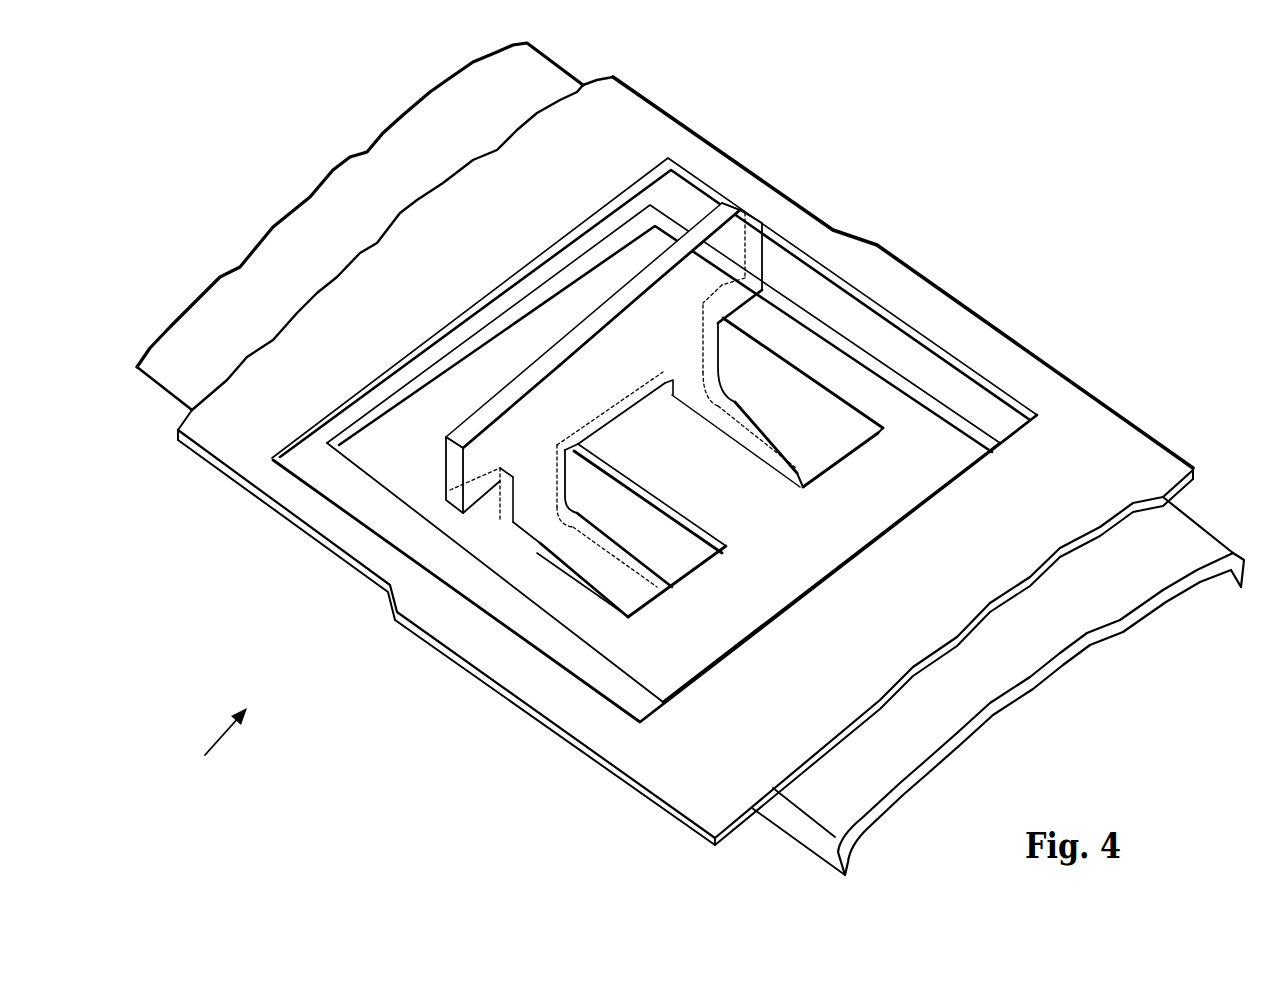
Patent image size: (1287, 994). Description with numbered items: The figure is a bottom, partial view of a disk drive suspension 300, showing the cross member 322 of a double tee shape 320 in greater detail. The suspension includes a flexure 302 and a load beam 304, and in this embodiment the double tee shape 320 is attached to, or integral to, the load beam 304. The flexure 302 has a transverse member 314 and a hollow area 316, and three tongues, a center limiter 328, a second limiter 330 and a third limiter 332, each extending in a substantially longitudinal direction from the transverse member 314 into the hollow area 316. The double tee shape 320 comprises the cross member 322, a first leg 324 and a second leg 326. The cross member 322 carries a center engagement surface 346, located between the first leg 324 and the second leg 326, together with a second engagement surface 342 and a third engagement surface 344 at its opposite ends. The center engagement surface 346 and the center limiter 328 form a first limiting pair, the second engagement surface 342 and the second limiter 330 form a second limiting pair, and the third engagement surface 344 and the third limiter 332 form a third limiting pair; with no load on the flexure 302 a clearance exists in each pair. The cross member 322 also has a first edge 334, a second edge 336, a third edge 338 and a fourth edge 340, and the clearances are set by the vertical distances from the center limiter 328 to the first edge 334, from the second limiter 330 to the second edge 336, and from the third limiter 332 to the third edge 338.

The disk drive suspension 300 is at (207, 753).
The flexure 302 is at (700, 770).
The load beam 304 is at (1074, 591).
The transverse member 314 is at (825, 500).
The hollow area 316 is at (840, 440).
The double tee shape 320 is at (647, 350).
The cross member 322 is at (530, 437).
The first leg 324 is at (693, 385).
The second leg 326 is at (498, 503).
The center limiter 328 is at (710, 473).
The second limiter 330 is at (818, 345).
The third limiter 332 is at (522, 570).
The first edge 334 is at (613, 397).
The second edge 336 is at (737, 285).
The third edge 338 is at (507, 477).
The fourth edge 340 is at (530, 440).
The second engagement surface 342 is at (718, 323).
The third engagement surface 344 is at (538, 483).
The center engagement surface 346 is at (585, 428).